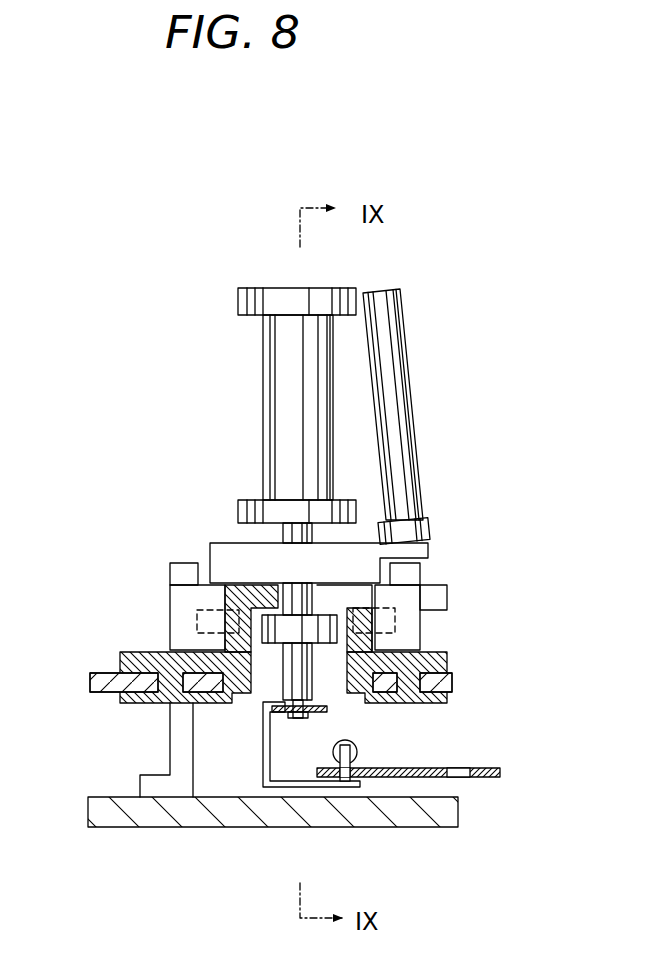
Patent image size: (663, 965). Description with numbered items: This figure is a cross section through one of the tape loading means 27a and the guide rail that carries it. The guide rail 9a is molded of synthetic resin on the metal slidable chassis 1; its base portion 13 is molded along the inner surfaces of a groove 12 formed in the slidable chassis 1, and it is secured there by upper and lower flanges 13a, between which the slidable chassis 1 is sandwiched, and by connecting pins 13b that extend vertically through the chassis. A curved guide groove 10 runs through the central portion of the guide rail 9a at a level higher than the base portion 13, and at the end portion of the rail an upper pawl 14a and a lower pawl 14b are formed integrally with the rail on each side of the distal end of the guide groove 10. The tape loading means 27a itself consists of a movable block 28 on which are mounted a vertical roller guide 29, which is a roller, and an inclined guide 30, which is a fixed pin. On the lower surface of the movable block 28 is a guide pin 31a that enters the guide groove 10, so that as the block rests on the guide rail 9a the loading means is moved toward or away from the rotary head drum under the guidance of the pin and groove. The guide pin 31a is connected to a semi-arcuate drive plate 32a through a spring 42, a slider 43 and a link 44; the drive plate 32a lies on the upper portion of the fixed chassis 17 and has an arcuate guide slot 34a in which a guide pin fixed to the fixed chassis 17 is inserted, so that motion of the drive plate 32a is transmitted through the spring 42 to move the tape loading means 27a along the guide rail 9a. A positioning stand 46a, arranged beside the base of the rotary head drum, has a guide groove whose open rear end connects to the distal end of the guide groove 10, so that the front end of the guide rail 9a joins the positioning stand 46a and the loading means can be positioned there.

The tape loading means 27a is at (172, 354).
The vertical roller guide 29 is at (275, 340).
The inclined guide 30 is at (397, 342).
The movable block 28 is at (233, 578).
The guide rail 9a is at (233, 548).
The upper pawl 14a is at (183, 573).
The lower pawl 14b is at (197, 605).
The base portion 13 is at (377, 645).
The upper and lower flanges 13a is at (122, 668).
The connecting pins 13b is at (162, 652).
The groove 12 is at (228, 700).
The slidable chassis 1 is at (91, 675).
The curved guide groove 10 is at (312, 597).
The guide pin 31a is at (302, 665).
The link 44 is at (268, 703).
The slider 43 is at (308, 783).
The spring 42 is at (358, 750).
The drive plate 32a is at (495, 768).
The arcuate guide slot 34a is at (463, 770).
The fixed chassis 17 is at (108, 808).
The positioning stand 46a is at (188, 756).